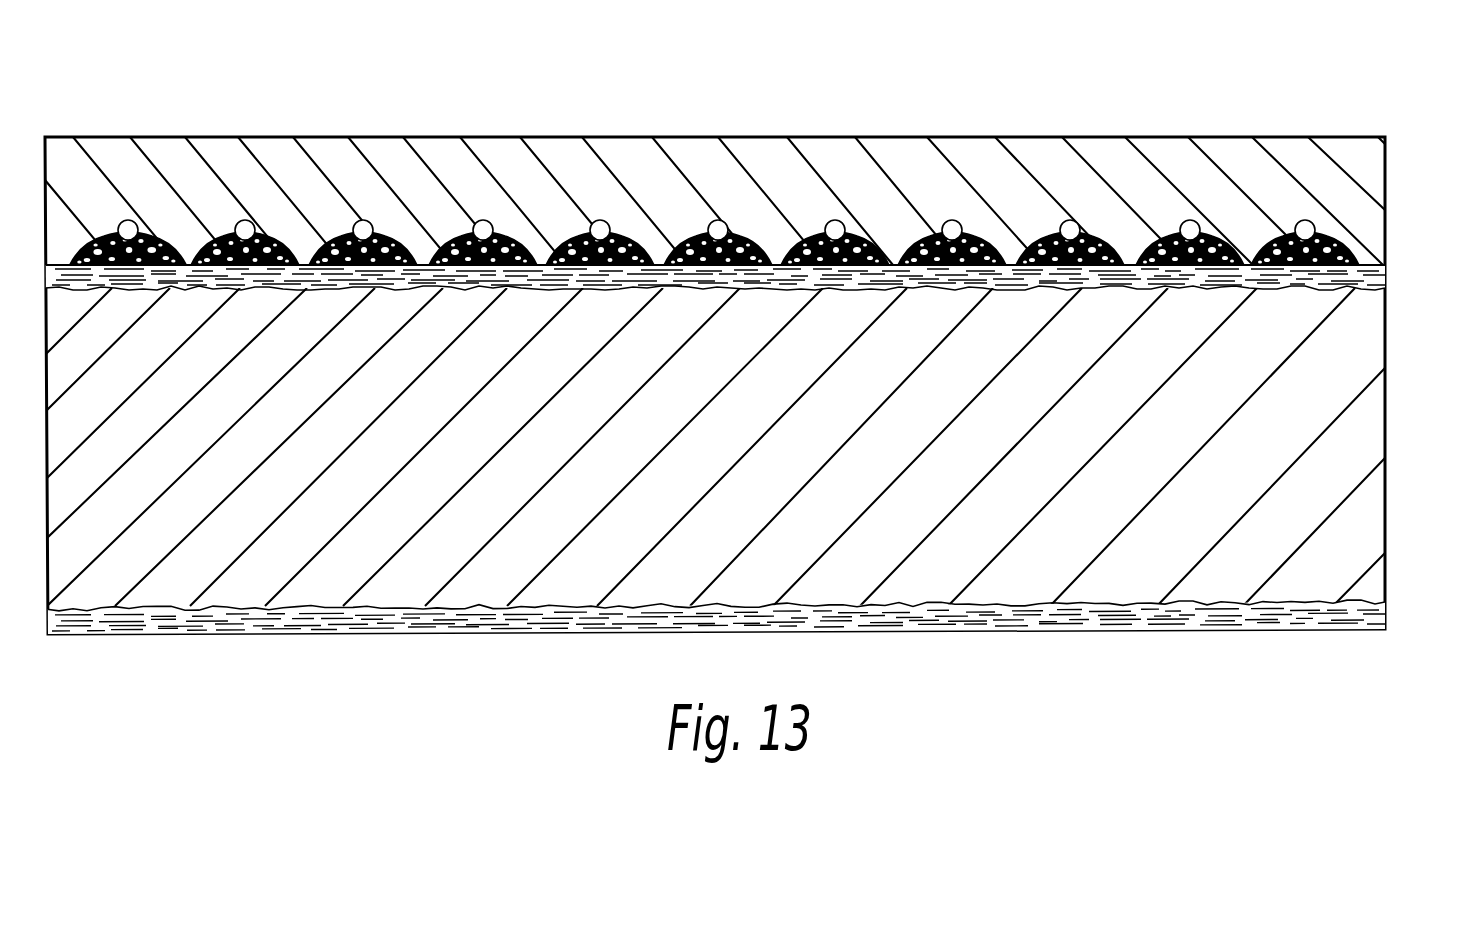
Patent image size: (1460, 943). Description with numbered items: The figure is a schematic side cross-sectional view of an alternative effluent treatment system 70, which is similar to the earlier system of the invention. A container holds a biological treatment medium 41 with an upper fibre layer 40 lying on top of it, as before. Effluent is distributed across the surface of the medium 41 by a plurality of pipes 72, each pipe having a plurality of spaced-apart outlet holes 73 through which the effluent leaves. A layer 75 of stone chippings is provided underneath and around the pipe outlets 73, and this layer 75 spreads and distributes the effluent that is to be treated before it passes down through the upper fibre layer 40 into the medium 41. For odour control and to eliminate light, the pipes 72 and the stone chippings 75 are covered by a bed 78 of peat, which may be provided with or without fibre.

The effluent treatment system 70 is at (1163, 90).
The bed of peat 78 is at (1250, 160).
The pipes 72 is at (1310, 225).
The outlet holes 73 is at (1348, 248).
The upper fibre layer 40 is at (1378, 268).
The biological treatment medium 41 is at (1350, 412).
The layer of stone chippings 75 is at (83, 266).